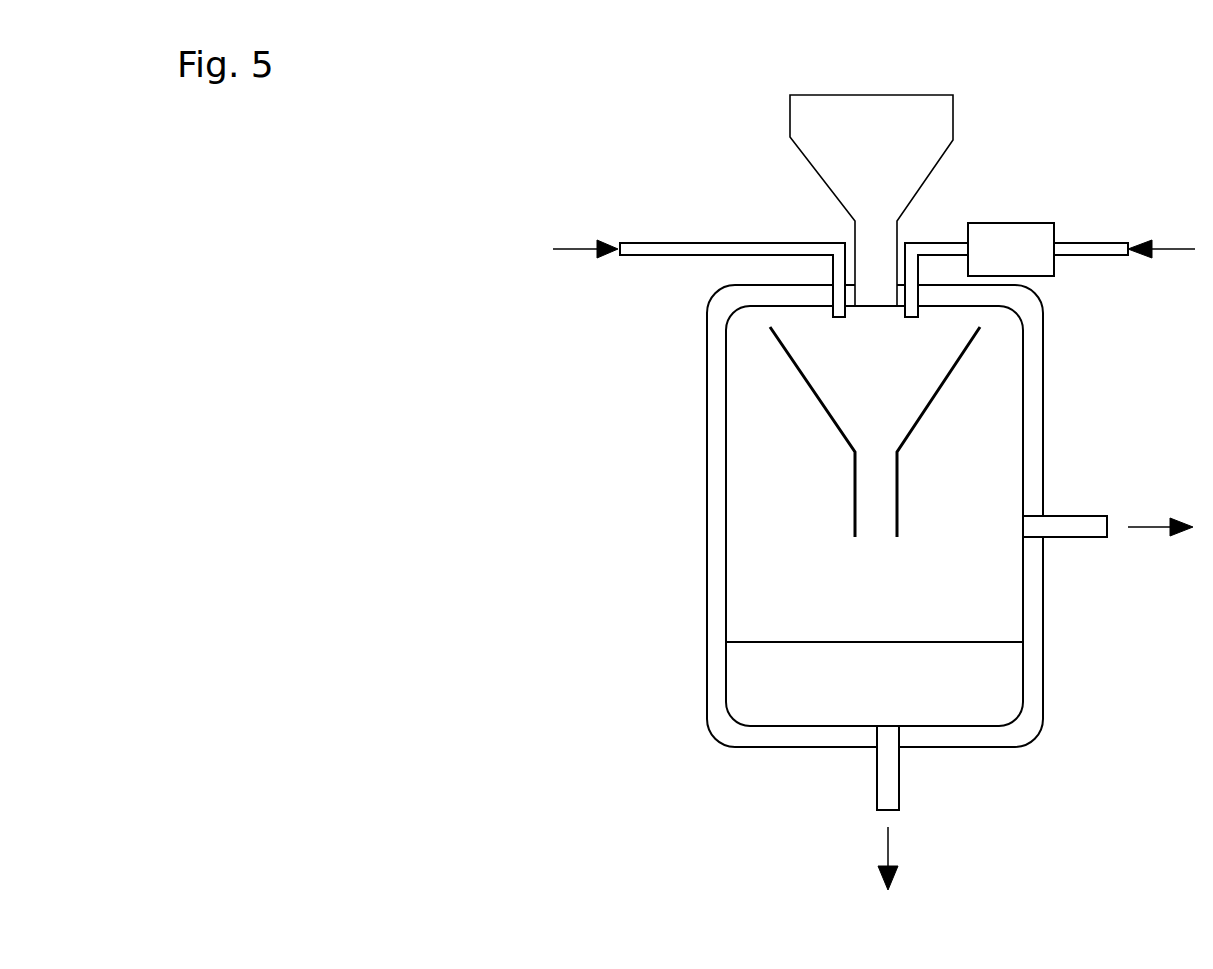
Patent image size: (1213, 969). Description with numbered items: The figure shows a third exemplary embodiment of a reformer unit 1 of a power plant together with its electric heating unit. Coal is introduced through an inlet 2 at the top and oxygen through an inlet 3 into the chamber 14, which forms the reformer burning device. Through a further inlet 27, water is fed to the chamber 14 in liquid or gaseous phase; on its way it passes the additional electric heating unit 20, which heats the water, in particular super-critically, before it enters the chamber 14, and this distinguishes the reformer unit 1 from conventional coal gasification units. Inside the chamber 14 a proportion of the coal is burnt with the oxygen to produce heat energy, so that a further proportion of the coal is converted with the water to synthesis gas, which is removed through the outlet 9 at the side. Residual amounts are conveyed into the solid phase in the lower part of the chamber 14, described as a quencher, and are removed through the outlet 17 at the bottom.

The reformer unit 1 is at (1128, 106).
The inlet 2 is at (876, 158).
The inlet 3 is at (680, 243).
The outlet 9 is at (1070, 516).
The chamber 14 is at (743, 528).
The outlet 17 is at (877, 780).
The electric heating unit 20 is at (990, 262).
The further inlet 27 is at (1087, 243).